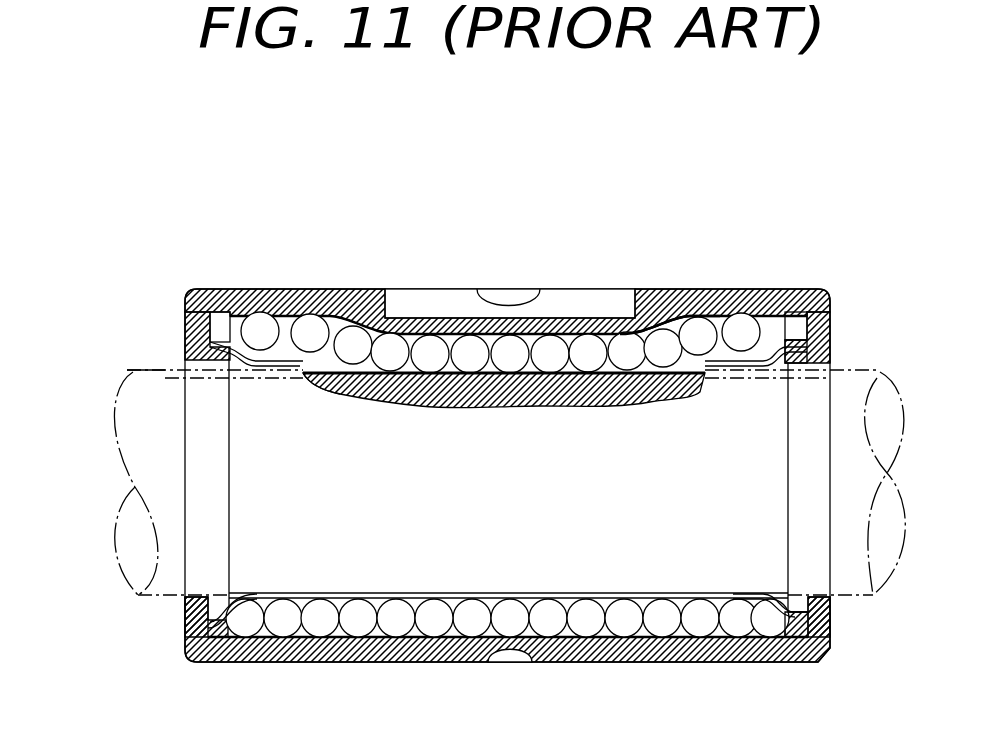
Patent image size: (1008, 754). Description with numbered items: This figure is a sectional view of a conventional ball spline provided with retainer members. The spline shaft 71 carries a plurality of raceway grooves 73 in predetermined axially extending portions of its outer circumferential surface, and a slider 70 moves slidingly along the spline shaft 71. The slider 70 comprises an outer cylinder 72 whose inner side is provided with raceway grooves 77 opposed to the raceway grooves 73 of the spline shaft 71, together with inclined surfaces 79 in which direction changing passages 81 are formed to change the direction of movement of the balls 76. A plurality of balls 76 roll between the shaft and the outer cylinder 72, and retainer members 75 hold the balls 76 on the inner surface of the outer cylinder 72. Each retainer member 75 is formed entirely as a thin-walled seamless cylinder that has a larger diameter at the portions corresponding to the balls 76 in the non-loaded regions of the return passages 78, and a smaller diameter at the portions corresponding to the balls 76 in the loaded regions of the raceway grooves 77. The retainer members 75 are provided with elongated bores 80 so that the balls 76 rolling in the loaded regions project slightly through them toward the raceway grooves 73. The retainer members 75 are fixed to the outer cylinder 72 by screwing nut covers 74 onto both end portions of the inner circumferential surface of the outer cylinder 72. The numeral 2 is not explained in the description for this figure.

The slider 70 is at (515, 287).
The spline shaft 71 is at (132, 420).
The outer cylinder 72 is at (272, 306).
The raceway grooves 73 is at (157, 373).
The nut covers 74 is at (195, 320).
The retainer members 75 is at (797, 345).
The balls 76 is at (350, 345).
The raceway grooves 77 is at (468, 350).
The return passages 78 is at (430, 626).
The inclined surfaces 79 is at (690, 323).
The elongated bores 80 is at (660, 404).
The direction changing passages 81 is at (786, 322).
The raceway surface 2 is at (368, 398).